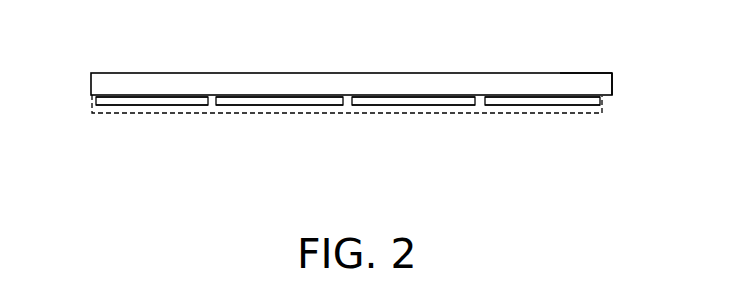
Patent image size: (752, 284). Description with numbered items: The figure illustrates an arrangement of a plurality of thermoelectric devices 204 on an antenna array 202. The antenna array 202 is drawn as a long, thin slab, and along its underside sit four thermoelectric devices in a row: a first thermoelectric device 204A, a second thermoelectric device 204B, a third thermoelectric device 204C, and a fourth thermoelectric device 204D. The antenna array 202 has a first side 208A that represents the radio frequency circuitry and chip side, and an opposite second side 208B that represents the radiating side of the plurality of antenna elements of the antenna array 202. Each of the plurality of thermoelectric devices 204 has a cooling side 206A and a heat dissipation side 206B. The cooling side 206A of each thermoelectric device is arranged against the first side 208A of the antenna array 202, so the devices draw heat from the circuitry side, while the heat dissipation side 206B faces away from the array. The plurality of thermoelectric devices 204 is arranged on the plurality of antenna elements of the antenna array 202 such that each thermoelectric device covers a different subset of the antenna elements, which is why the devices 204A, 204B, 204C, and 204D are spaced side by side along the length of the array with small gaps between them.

The antenna array 202 is at (613, 73).
The plurality of thermoelectric devices 204 is at (92, 112).
The first thermoelectric device 204A is at (185, 104).
The second thermoelectric device 204B is at (327, 104).
The third thermoelectric device 204C is at (460, 104).
The fourth thermoelectric device 204D is at (593, 104).
The cooling side 206A is at (120, 98).
The heat dissipation side 206B is at (120, 105).
The first side 208A is at (612, 95).
The second side 208B is at (590, 73).